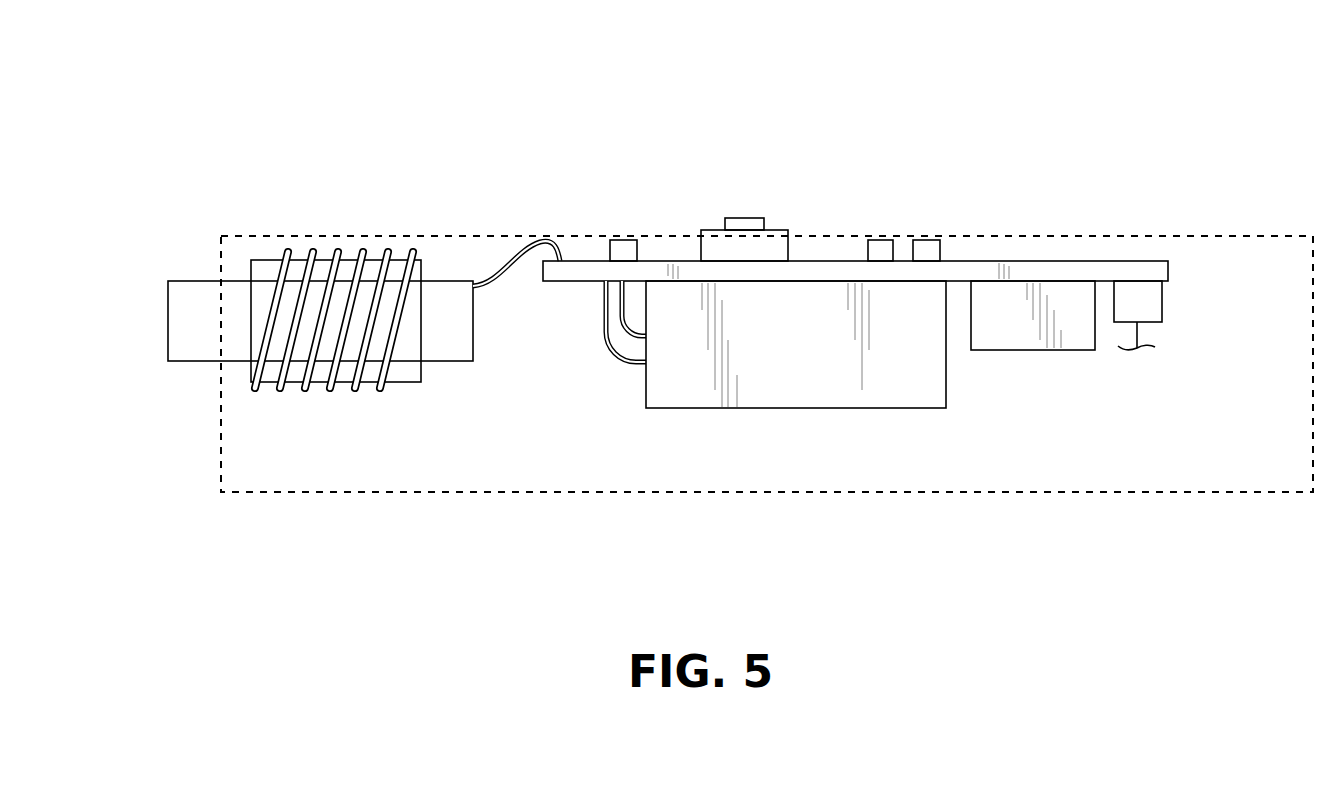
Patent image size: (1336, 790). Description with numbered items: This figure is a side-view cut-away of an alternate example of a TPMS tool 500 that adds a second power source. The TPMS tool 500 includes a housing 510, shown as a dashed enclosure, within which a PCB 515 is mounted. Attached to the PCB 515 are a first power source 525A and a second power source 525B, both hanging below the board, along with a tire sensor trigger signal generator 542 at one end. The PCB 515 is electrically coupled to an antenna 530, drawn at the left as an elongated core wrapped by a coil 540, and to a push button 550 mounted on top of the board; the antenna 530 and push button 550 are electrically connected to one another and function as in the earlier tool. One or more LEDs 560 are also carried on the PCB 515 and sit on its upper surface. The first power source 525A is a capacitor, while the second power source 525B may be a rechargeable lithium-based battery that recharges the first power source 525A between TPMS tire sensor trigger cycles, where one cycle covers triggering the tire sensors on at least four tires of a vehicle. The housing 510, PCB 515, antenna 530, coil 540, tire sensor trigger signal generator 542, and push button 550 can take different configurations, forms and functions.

The TPMS tool 500 is at (141, 76).
The housing 510 is at (463, 492).
The PCB 515 is at (1032, 270).
The first power source 525A is at (805, 380).
The second power source 525B is at (1016, 333).
The antenna 530 is at (188, 315).
The coil 540 is at (325, 264).
The tire sensor trigger signal generator 542 is at (1148, 298).
The push button 550 is at (747, 222).
The LEDs 560 is at (623, 247).